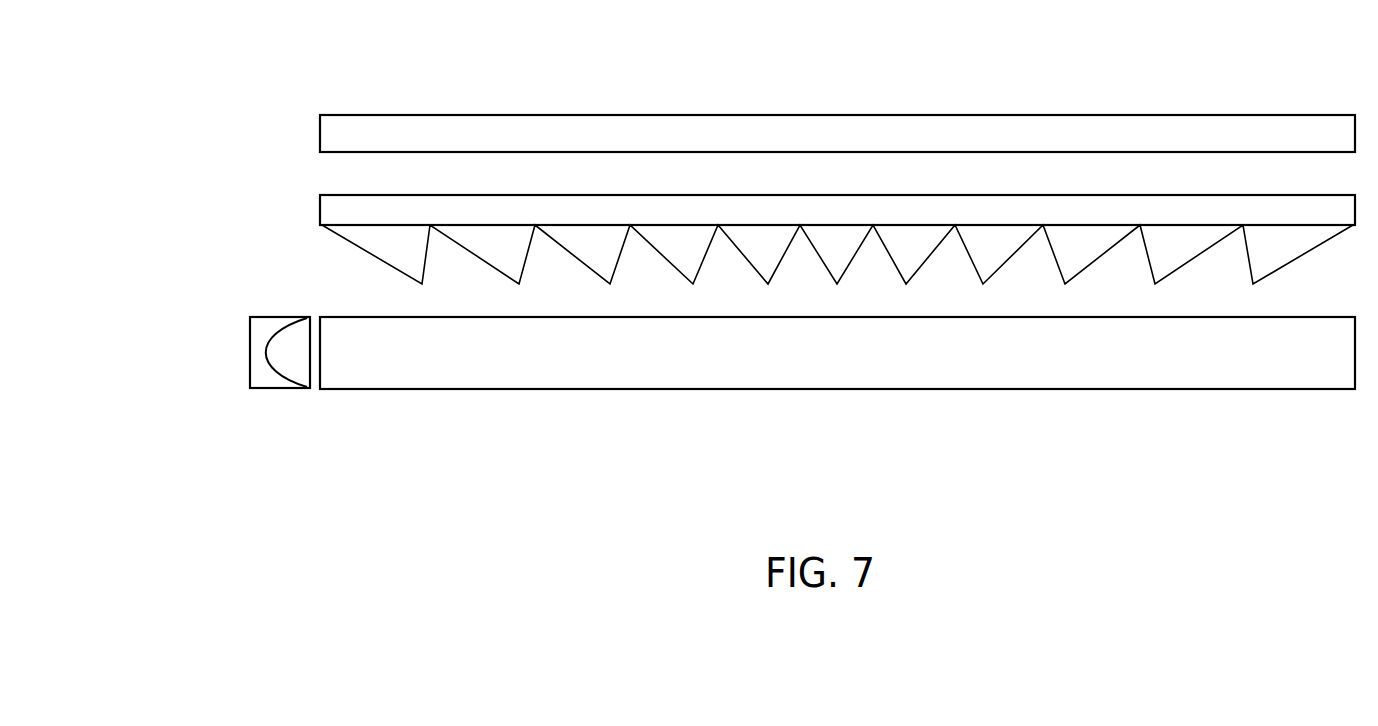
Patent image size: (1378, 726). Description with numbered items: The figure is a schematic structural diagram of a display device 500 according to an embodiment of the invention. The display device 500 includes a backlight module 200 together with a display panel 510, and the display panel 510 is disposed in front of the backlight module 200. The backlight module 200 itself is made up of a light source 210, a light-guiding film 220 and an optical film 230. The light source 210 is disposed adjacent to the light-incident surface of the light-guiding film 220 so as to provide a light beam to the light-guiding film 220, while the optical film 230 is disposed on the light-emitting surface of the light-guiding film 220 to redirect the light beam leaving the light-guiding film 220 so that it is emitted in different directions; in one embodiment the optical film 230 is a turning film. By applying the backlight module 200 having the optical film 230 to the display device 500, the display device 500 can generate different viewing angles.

The display device 500 is at (136, 80).
The display panel 510 is at (332, 134).
The backlight module 200 is at (127, 194).
The optical film 230 is at (335, 211).
The light-guiding film 220 is at (343, 330).
The light source 210 is at (256, 352).